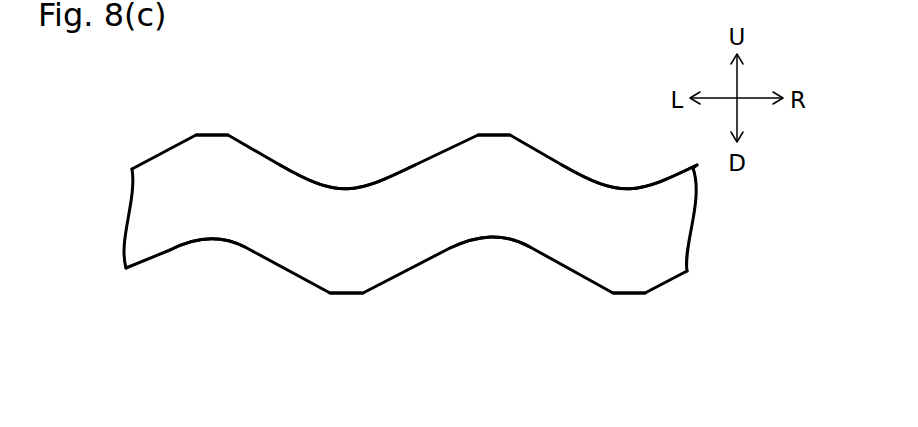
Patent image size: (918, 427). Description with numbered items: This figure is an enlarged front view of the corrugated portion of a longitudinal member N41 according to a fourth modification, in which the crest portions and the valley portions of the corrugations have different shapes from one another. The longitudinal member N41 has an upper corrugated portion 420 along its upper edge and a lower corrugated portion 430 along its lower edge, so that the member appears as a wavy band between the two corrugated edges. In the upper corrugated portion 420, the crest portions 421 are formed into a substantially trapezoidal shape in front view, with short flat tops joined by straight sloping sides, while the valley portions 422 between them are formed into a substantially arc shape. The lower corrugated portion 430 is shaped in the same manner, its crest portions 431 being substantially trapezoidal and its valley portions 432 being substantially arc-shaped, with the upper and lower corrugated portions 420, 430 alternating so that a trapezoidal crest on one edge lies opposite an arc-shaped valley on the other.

The longitudinal member N41 is at (361, 213).
The upper corrugated portion 420 is at (145, 127).
The crest portion 421 is at (210, 135).
The valley portion 422 is at (350, 189).
The lower corrugated portion 430 is at (148, 285).
The crest portion 431 is at (347, 293).
The valley portion 432 is at (207, 237).